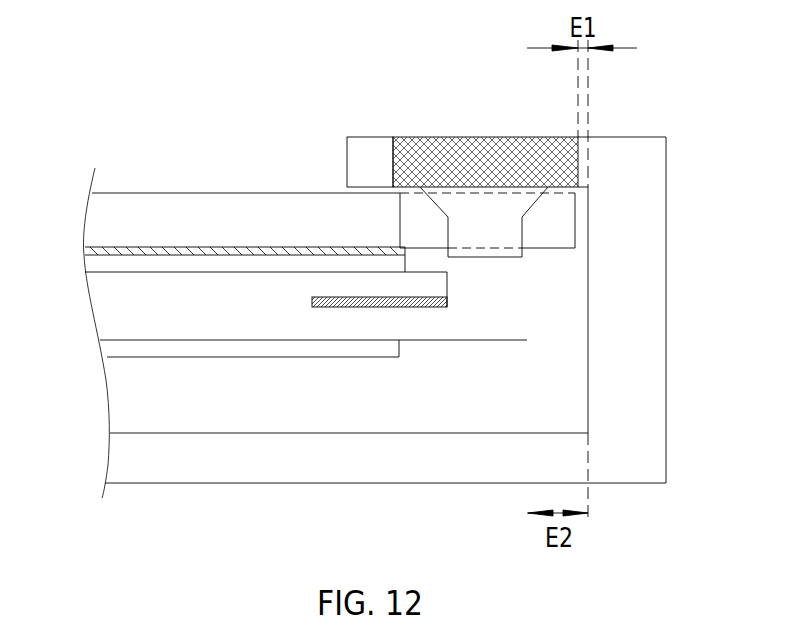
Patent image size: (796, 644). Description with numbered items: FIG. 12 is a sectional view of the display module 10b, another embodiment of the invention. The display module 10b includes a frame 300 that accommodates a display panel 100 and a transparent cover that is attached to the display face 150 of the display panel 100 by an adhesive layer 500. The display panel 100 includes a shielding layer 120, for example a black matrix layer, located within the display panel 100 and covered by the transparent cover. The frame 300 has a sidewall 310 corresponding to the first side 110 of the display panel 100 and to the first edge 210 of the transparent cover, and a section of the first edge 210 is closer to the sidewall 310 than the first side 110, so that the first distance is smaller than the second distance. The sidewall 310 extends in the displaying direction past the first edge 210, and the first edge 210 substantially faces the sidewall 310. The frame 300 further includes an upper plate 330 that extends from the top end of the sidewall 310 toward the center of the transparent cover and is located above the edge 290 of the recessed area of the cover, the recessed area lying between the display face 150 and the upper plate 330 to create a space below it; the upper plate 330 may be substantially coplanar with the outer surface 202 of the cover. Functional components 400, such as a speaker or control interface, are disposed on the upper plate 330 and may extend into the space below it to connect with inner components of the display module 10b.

The display module 10b is at (57, 95).
The display panel 100 is at (87, 268).
The first side 110 is at (528, 323).
The shielding layer 120 is at (323, 294).
The display face 150 is at (117, 250).
The outer surface 202 is at (143, 192).
The first edge 210 is at (577, 210).
The edge of the first recessed area 290 is at (400, 213).
The frame 300 is at (677, 225).
The sidewall 310 is at (655, 413).
The upper plate 330 is at (363, 157).
The functional components 400 is at (520, 137).
The adhesive layer 500 is at (197, 247).